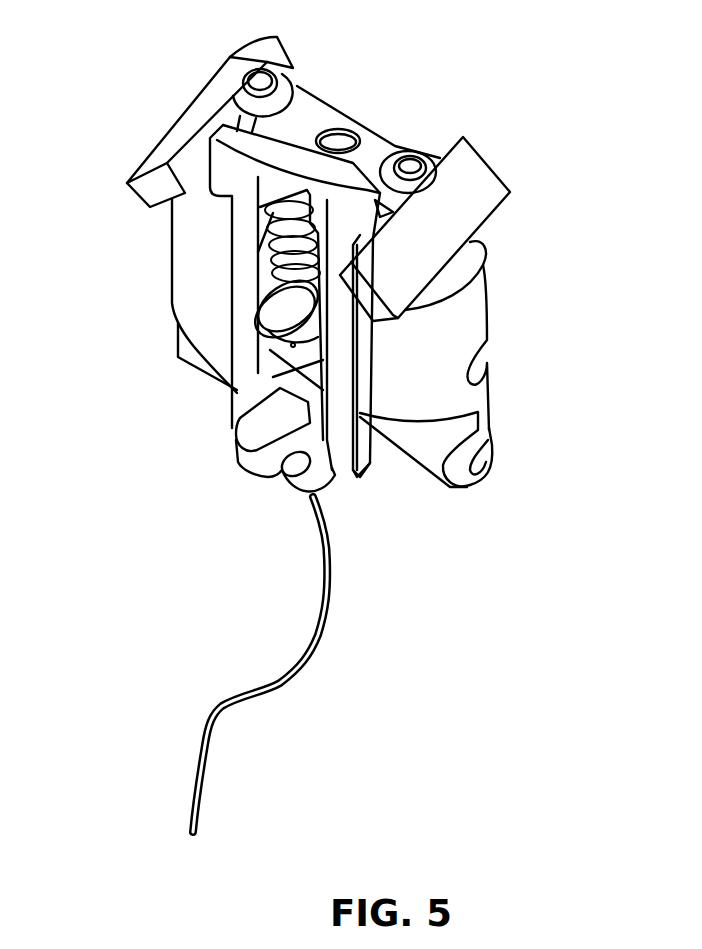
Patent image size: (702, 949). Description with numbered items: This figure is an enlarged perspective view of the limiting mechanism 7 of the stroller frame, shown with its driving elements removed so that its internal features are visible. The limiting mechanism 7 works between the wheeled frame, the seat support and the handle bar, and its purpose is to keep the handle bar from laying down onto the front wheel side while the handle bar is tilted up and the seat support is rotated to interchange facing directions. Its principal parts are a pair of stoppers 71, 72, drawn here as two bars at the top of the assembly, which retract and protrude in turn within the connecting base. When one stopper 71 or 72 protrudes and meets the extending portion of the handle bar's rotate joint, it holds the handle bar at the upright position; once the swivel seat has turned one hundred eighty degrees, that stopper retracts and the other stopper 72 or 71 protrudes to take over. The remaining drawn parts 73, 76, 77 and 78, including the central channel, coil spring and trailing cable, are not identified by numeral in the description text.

The limiting mechanism 7 is at (600, 110).
The stopper 71 is at (443, 250).
The stopper 72 is at (180, 117).
The housing 73 is at (353, 112).
The slide channel 76 is at (243, 335).
The spring 77 is at (270, 245).
The wire 78 is at (307, 660).